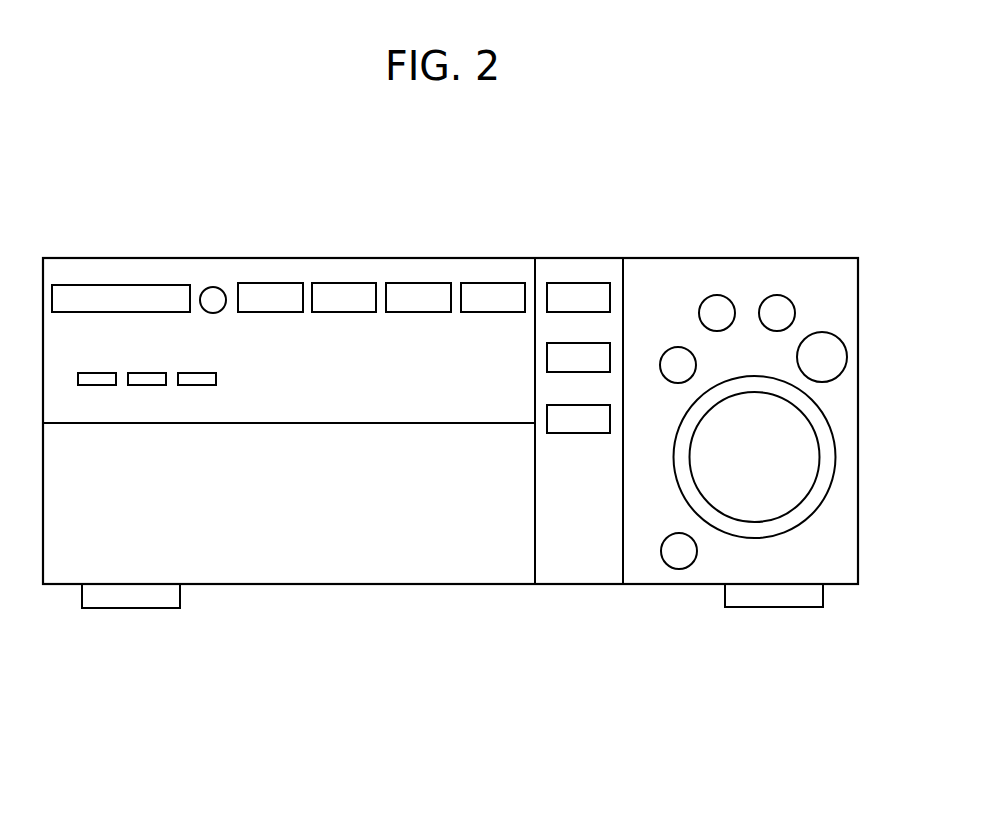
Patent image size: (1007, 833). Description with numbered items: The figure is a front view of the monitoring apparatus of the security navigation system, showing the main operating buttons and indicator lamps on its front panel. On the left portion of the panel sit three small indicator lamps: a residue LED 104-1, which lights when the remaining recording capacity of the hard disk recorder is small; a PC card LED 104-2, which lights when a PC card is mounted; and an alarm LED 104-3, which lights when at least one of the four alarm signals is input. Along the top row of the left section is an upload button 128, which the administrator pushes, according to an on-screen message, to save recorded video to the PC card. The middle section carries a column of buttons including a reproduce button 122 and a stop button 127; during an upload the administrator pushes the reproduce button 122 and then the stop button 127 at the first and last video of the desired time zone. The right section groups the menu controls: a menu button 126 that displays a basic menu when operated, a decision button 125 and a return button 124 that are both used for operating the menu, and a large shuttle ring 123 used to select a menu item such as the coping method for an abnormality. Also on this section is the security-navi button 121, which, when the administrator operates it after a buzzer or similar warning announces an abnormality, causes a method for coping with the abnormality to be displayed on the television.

The upload button 128 is at (270, 283).
The reproduce button 122 is at (548, 312).
The stop button 127 is at (577, 372).
The menu button 126 is at (717, 303).
The decision button 125 is at (678, 355).
The security navigation button 121 is at (822, 342).
The shuttle ring 123 is at (725, 520).
The return button 124 is at (673, 558).
The residue LED 104-1 is at (97, 387).
The PC card LED 104-2 is at (147, 387).
The alarm LED 104-3 is at (197, 387).